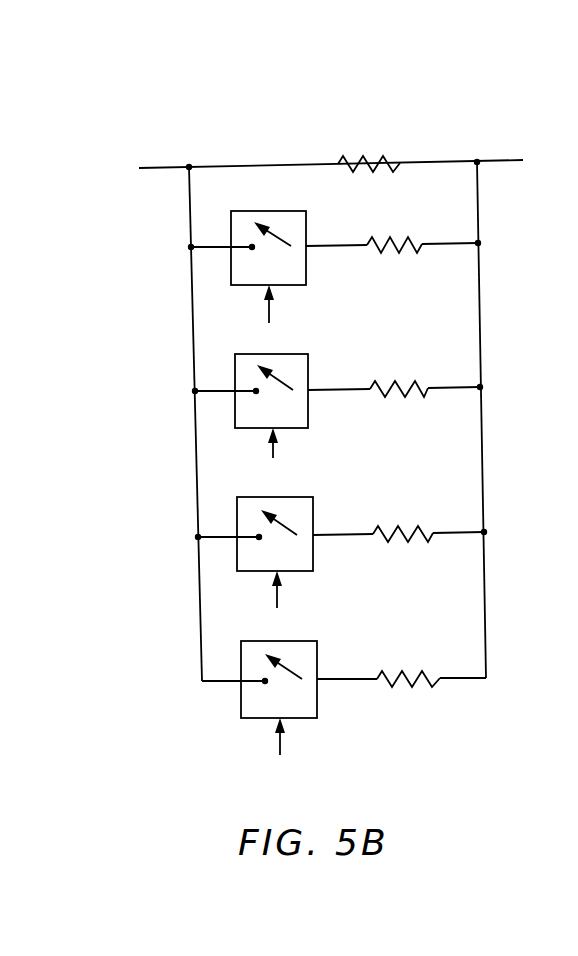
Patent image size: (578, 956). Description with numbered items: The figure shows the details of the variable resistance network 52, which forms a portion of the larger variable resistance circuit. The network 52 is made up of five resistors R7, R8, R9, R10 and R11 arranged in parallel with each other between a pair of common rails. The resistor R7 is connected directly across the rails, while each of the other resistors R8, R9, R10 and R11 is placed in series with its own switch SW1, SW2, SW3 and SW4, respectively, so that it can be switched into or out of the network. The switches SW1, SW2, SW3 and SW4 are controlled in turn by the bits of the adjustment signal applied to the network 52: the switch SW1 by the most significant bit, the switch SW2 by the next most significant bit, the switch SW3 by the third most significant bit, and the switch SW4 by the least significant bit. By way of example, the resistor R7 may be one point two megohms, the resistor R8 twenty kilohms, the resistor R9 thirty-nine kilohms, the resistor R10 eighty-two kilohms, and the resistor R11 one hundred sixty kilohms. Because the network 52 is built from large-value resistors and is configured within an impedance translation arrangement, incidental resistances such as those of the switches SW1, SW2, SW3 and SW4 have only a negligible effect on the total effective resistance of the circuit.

The variable resistance network 52 is at (212, 104).
The resistor R7 is at (368, 158).
The resistor R8 is at (410, 238).
The resistor R9 is at (413, 382).
The resistor R10 is at (403, 527).
The resistor R11 is at (408, 672).
The switch SW1 is at (306, 226).
The switch SW2 is at (308, 361).
The switch SW3 is at (313, 509).
The switch SW4 is at (317, 654).